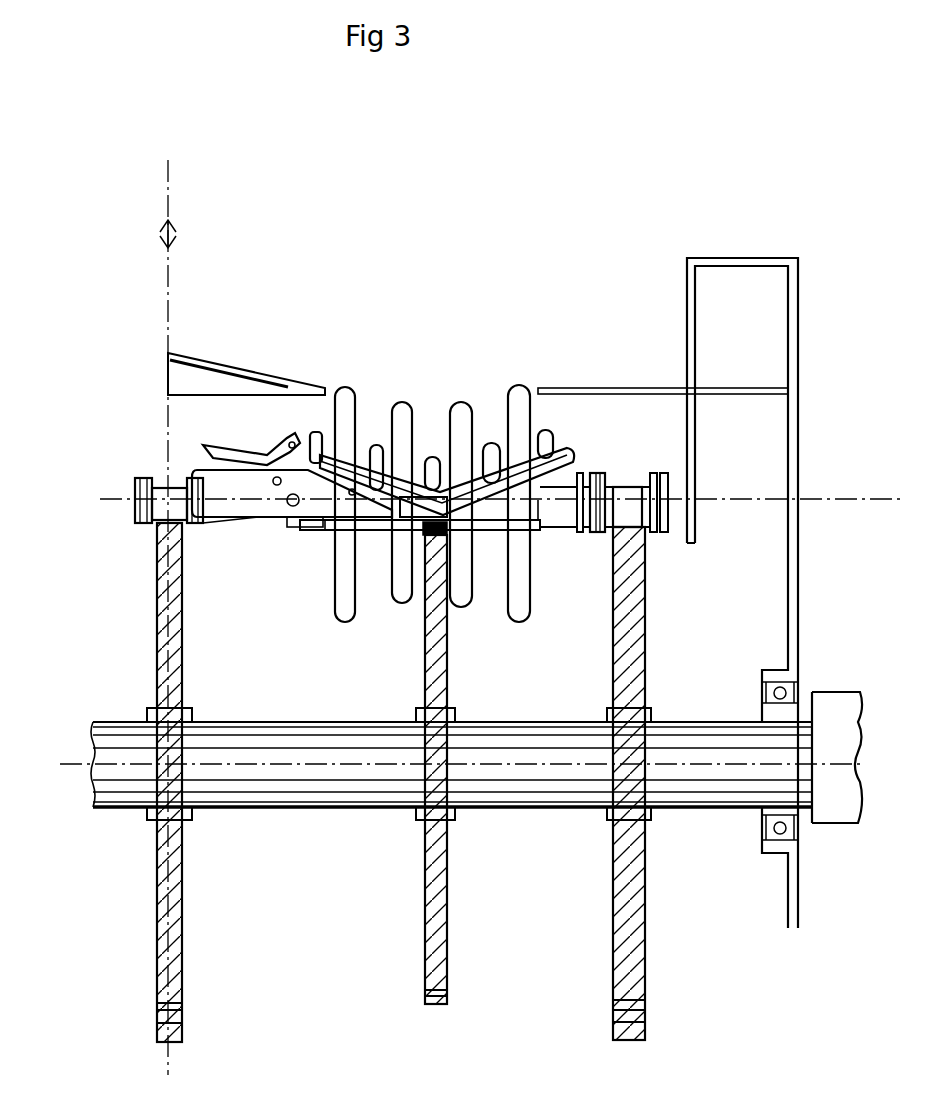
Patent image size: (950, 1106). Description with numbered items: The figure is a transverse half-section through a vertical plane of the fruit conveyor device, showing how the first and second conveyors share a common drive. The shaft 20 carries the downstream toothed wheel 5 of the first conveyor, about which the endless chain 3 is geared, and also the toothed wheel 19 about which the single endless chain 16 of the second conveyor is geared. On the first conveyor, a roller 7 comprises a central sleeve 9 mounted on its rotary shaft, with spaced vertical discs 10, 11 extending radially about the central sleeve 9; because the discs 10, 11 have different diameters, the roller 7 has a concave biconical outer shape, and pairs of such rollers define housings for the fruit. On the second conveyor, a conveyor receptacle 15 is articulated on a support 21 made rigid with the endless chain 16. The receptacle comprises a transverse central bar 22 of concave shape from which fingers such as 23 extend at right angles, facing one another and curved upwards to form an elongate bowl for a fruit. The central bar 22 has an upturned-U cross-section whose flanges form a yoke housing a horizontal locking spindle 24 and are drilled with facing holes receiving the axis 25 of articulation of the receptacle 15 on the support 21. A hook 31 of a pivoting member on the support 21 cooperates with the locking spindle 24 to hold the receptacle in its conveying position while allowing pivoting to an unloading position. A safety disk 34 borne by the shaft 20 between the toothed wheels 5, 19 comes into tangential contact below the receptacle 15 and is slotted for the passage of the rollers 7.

The endless chain 3 is at (604, 486).
The toothed wheel 5 is at (636, 975).
The roller 7 is at (423, 400).
The central sleeve 9 is at (493, 532).
The vertical disc 10 is at (342, 604).
The vertical disc 11 is at (401, 600).
The conveyor receptacle 15 is at (567, 436).
The endless chain 16 is at (137, 498).
The toothed wheel 19 is at (162, 681).
The shaft 20 is at (120, 798).
The support 21 is at (218, 524).
The transverse central bar 22 is at (500, 445).
The finger 23 is at (312, 432).
The locking spindle 24 is at (292, 461).
The axis of articulation 25 is at (350, 494).
The hook 31 is at (232, 452).
The disk 34 is at (426, 972).